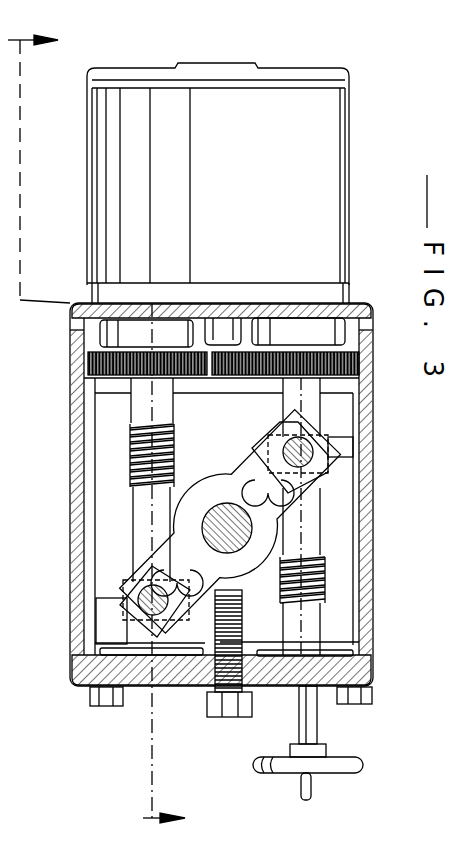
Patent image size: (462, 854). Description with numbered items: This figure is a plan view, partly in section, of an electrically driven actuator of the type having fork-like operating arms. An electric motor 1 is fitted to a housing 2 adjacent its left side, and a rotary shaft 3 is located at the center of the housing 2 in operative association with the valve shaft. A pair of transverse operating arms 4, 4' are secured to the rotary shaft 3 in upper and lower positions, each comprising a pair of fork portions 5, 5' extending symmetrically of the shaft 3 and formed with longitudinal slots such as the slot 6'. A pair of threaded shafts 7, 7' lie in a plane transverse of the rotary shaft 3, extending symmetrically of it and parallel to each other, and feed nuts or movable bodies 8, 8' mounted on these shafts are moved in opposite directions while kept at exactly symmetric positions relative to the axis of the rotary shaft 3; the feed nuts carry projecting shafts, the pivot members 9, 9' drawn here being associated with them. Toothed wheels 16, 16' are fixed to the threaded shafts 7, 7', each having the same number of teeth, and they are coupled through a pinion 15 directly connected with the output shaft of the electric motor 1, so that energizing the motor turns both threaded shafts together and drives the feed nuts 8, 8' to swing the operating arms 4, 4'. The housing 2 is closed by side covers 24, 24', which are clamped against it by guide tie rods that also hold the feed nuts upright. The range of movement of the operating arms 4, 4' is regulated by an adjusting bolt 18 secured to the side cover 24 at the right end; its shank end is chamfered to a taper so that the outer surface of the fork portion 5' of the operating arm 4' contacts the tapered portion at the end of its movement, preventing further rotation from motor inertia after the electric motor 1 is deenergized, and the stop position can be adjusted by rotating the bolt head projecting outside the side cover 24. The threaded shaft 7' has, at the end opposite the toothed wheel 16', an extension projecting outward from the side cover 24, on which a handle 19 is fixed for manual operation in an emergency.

The electric motor 1 is at (218, 183).
The housing 2 is at (375, 503).
The rotary shaft 3 is at (213, 507).
The operating arm 4 is at (109, 428).
The operating arm 4' is at (230, 519).
The fork portion 5 is at (135, 480).
The fork portion 5' is at (317, 516).
The longitudinal slot 6' is at (222, 499).
The threaded shaft 7 is at (136, 461).
The threaded shaft 7' is at (317, 578).
The feed nut 8 is at (109, 621).
The feed nut 8' is at (339, 429).
The lower pivot block 9 is at (167, 601).
The upper pivot block 9' is at (290, 447).
The pinion 15 is at (224, 378).
The toothed wheel 16 is at (118, 371).
The toothed wheel 16' is at (310, 364).
The adjusting bolt 18 is at (215, 682).
The handle 19 is at (347, 768).
The side cover 24 is at (248, 679).
The side cover 24' is at (240, 277).